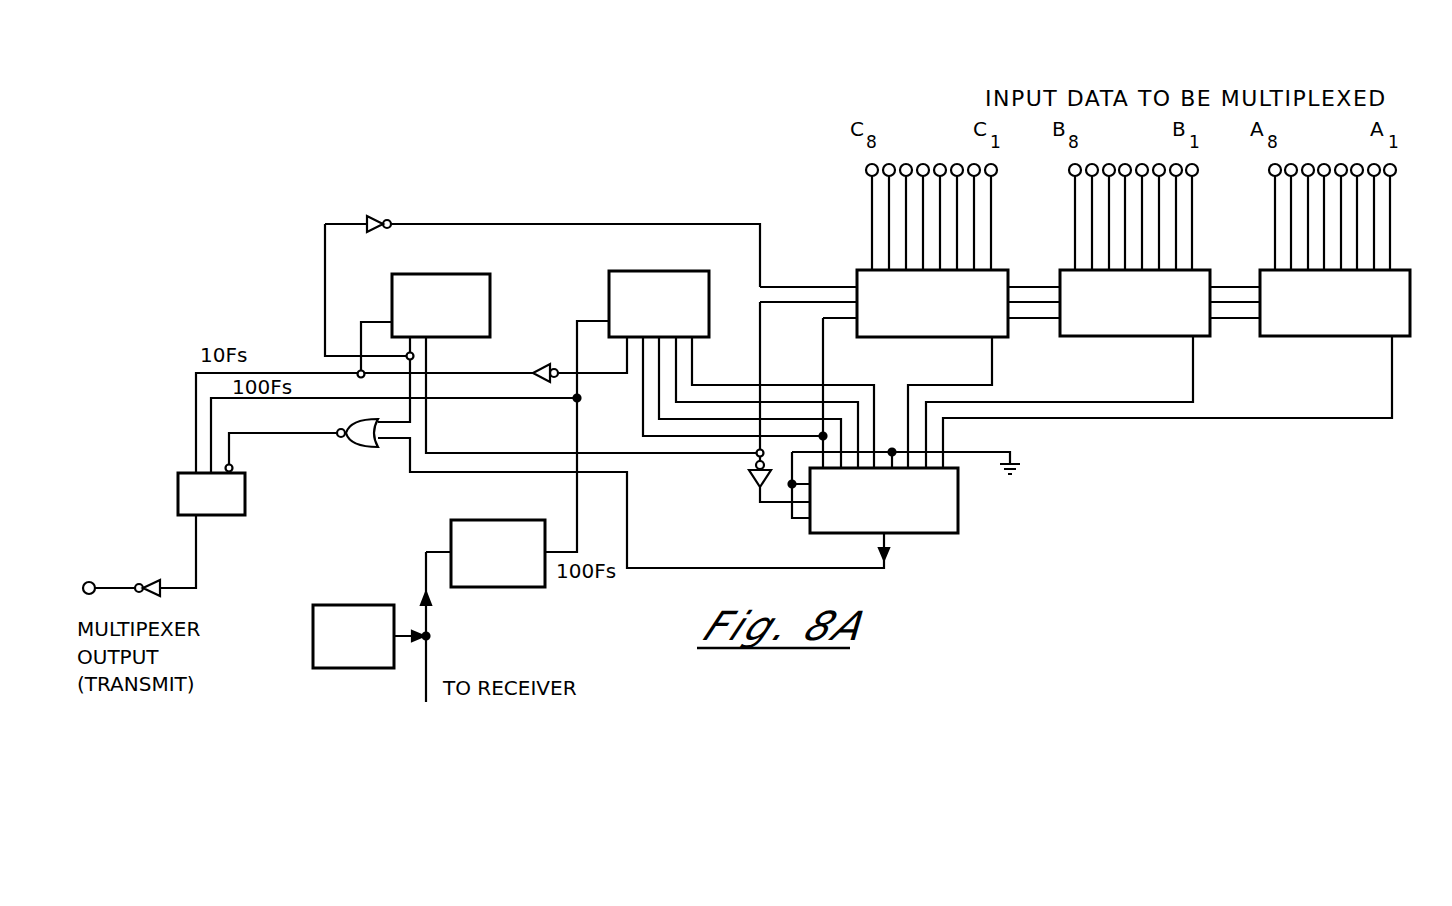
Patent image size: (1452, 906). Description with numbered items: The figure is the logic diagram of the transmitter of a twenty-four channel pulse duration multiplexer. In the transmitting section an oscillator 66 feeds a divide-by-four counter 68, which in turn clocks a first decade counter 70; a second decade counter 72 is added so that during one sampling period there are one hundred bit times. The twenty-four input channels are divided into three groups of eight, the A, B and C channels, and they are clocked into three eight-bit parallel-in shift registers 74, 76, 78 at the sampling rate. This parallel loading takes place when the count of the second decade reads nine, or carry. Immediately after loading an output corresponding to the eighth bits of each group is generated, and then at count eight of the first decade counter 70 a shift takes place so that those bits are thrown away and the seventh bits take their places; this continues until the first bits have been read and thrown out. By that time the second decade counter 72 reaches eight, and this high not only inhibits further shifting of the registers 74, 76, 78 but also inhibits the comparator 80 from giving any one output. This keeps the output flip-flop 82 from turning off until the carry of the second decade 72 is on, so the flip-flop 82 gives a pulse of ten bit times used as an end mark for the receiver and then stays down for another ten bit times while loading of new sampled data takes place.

The oscillator 66 is at (353, 620).
The (÷4) counter 68 is at (498, 537).
The first decade counter 70 is at (446, 292).
The second decade counter 72 is at (659, 299).
The 8 bit parallel-in shift register 74 is at (1011, 278).
The 8 bit parallel-in shift register 76 is at (1146, 288).
The 8 bit parallel-in shift register 78 is at (1412, 287).
The comparator 80 is at (988, 520).
The FF 82 is at (230, 494).